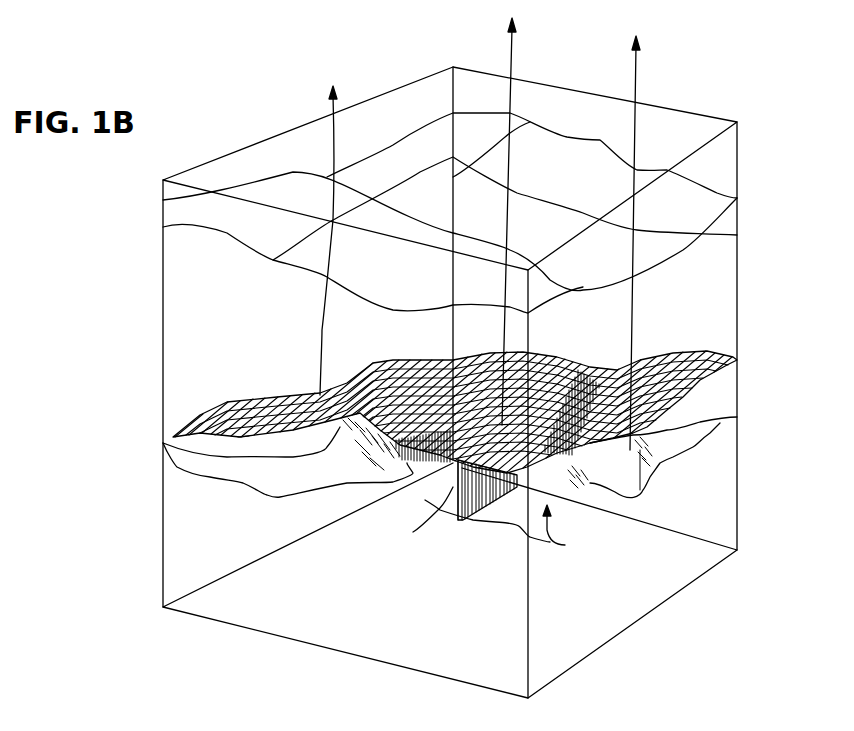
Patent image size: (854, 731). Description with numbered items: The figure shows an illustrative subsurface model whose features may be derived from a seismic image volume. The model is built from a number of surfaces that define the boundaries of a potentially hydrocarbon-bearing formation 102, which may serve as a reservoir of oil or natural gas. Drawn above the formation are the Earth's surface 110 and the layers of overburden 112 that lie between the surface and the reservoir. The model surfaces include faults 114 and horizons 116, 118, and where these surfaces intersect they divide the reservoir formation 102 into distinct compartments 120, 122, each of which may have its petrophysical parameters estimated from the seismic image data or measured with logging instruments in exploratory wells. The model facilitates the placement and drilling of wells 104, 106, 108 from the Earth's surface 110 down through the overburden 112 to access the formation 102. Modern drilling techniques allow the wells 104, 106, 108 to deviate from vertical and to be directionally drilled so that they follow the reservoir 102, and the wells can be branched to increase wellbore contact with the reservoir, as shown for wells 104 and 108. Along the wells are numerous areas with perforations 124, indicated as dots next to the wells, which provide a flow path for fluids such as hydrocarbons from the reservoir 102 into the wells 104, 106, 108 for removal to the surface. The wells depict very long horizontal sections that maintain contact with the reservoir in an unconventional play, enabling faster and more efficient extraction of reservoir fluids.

The formation 102 is at (173, 437).
The well 104 is at (332, 125).
The well 106 is at (512, 60).
The well 108 is at (636, 80).
The Earth's surface 110 is at (163, 198).
The layers of overburden 112 is at (163, 334).
The fault 114 is at (468, 515).
The horizon 116 is at (720, 355).
The horizon 118 is at (718, 422).
The compartment 120 is at (428, 475).
The compartment 122 is at (571, 531).
The perforations 124 is at (373, 372).